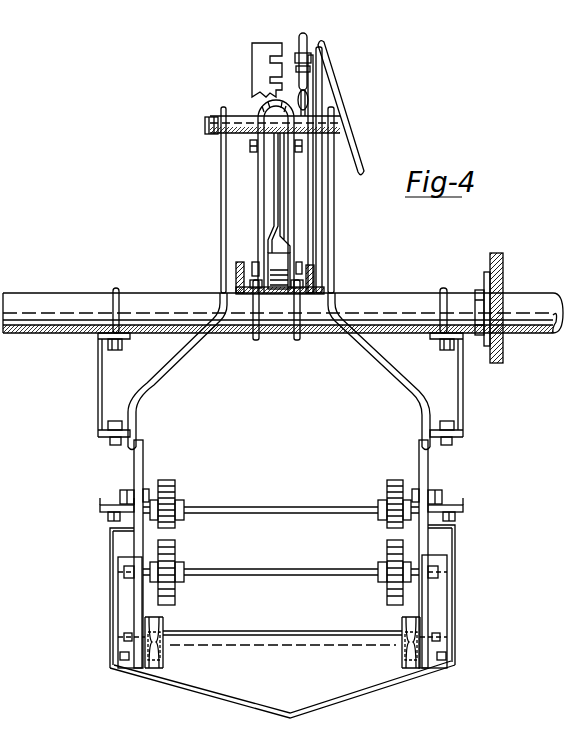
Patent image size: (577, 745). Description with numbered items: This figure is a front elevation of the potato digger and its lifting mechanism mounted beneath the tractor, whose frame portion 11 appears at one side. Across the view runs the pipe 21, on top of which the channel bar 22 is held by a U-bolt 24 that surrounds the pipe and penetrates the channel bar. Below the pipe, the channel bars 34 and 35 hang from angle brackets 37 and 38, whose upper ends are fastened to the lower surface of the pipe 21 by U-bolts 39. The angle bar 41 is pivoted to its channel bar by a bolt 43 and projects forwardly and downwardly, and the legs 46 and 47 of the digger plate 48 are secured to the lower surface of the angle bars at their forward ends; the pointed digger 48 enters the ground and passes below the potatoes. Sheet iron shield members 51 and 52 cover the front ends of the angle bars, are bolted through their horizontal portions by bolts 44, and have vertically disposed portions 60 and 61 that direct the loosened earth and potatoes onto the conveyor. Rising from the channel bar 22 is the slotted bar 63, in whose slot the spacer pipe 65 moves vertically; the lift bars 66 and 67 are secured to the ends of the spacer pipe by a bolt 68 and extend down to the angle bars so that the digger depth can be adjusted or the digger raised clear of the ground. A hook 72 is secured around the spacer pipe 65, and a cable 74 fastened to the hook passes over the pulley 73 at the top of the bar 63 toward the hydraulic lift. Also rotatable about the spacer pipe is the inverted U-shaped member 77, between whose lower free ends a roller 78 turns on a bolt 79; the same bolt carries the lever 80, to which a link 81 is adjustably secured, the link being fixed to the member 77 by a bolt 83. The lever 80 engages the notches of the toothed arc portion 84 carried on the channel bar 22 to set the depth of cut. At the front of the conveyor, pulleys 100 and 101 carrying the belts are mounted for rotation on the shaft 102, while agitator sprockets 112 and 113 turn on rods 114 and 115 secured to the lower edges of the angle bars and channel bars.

The frame portion 11 is at (503, 272).
The pipe 21 is at (33, 296).
The channel bar 22 is at (237, 276).
The U-bolt 24 is at (259, 339).
The channel bar 34 is at (104, 506).
The channel bar 35 is at (461, 504).
The angle bracket 37 is at (98, 392).
The angle bracket 38 is at (463, 392).
The U-bolt 39 is at (118, 290).
The angle bar 41 is at (110, 546).
The bolt 43 is at (120, 492).
The bolt 44 is at (120, 656).
The leg 46 is at (117, 634).
The leg 47 is at (450, 628).
The digger plate 48 is at (193, 683).
The shield member 51 is at (118, 605).
The shield member 52 is at (447, 608).
The vertically disposed portion 60 is at (144, 466).
The vertically disposed portion 61 is at (419, 466).
The bar 63 is at (322, 207).
The spacer pipe 65 is at (238, 115).
The lift bar 66 is at (167, 359).
The lift bar 67 is at (393, 363).
The bolt 68 is at (205, 126).
The hook 72 is at (307, 98).
The pulley 73 is at (309, 41).
The cable 74 is at (352, 148).
The inverted U-shaped member 77 is at (258, 207).
The roller 78 is at (280, 254).
The bolt 79 is at (254, 264).
The lever 80 is at (283, 170).
The link 81 is at (273, 177).
The bolt 83 is at (250, 146).
The arc portion 84 is at (258, 46).
The pulley 100 is at (162, 627).
The pulley 101 is at (403, 626).
The shaft 102 is at (262, 634).
The agitator sprocket 112 is at (176, 554).
The agitator sprocket 113 is at (176, 488).
The rod 114 is at (286, 569).
The rod 115 is at (287, 507).